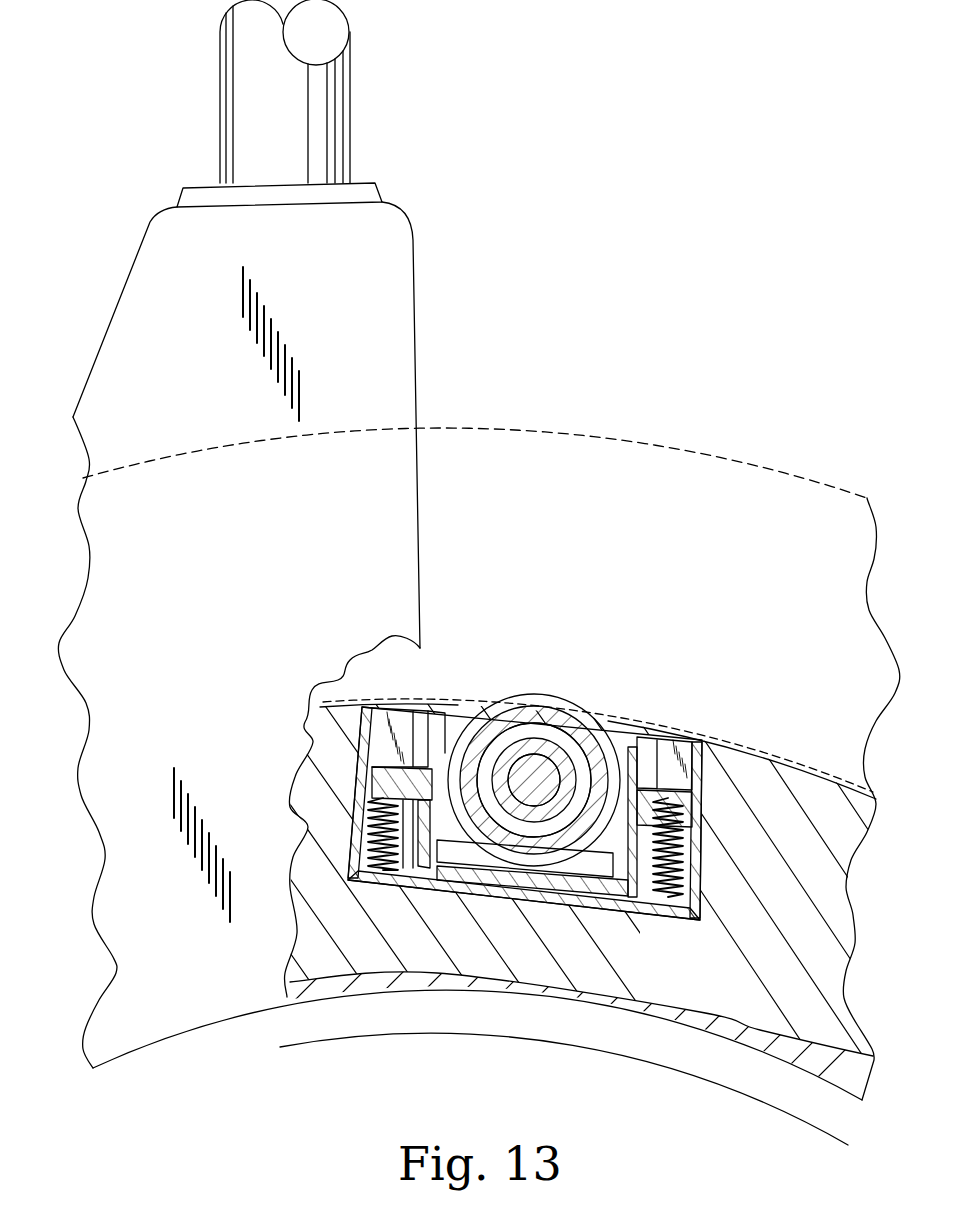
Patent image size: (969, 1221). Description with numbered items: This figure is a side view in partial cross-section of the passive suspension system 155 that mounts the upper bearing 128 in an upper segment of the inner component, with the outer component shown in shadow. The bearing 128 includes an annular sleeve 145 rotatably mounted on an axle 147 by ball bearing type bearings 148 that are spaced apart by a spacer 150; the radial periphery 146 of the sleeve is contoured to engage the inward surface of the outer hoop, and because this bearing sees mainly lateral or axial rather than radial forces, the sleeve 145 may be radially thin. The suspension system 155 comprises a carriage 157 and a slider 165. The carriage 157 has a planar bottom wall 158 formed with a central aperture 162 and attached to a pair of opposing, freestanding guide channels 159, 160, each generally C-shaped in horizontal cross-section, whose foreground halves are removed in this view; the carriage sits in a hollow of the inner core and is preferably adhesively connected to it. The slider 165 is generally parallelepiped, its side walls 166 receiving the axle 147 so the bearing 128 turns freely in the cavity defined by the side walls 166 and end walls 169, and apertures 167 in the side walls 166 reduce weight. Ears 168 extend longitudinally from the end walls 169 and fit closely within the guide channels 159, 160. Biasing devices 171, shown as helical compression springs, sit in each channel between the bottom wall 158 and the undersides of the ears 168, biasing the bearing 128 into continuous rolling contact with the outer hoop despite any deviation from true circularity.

The bearing 128 is at (628, 711).
The annular sleeve 145 is at (490, 745).
The radial periphery 146 is at (503, 703).
The axle 147 is at (532, 780).
The ball bearing type bearings 148 is at (540, 728).
The spacer 150 is at (590, 728).
The suspension system 155 is at (712, 928).
The carriage 157 is at (355, 705).
The bottom wall 158 is at (398, 888).
The guide channel 159 is at (352, 843).
The guide channel 160 is at (700, 847).
The central aperture 162 is at (582, 855).
The slider 165 is at (437, 715).
The side walls 166 is at (633, 770).
The apertures 167 is at (618, 897).
The ears 168 is at (400, 785).
The end walls 169 is at (415, 770).
The biasing devices 171 is at (360, 880).